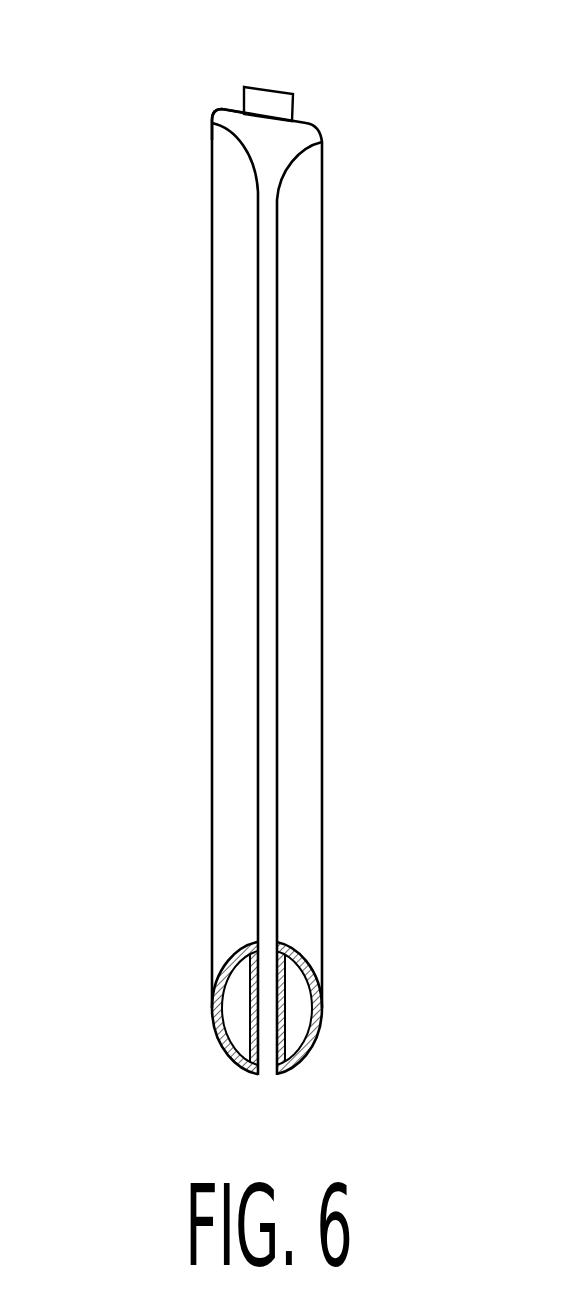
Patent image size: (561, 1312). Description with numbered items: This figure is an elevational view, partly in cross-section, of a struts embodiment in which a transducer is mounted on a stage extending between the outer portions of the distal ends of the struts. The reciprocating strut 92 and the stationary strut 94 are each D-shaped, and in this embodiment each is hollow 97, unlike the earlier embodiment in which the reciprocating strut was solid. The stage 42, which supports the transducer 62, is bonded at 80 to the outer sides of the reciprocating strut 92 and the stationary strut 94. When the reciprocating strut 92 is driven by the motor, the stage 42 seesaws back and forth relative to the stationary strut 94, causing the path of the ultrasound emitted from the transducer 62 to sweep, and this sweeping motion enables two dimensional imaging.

The stage 42 is at (250, 537).
The transducer 62 is at (264, 86).
The bond 80 is at (216, 108).
The reciprocating strut 92 is at (323, 316).
The stationary strut 94 is at (212, 411).
The hollow 97 is at (232, 1000).